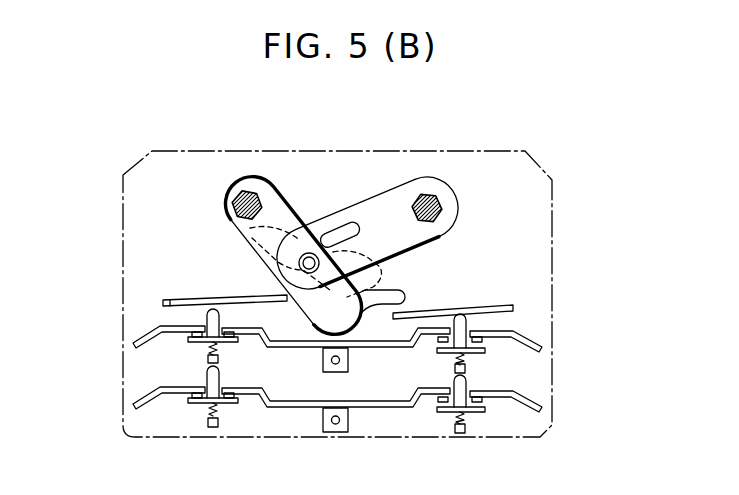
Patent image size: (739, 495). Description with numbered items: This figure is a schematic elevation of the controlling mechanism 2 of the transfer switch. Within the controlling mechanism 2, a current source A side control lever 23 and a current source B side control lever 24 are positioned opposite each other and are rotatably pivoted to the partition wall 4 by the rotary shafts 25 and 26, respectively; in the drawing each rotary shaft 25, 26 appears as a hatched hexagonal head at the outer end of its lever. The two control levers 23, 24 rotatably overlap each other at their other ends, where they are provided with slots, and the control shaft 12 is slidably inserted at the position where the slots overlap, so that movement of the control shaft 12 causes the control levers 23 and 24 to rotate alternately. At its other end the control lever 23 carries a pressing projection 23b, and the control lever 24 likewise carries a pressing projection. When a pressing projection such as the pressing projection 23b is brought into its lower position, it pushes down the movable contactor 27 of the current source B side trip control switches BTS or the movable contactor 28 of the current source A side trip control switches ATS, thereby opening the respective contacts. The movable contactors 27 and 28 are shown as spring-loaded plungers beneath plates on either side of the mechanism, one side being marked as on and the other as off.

The controlling mechanism 2 is at (562, 191).
The partition wall 4 is at (522, 165).
The control shaft 12 is at (310, 252).
The current source A side control lever 23 is at (277, 205).
The pressing projection 23b is at (390, 297).
The current source B side control lever 24 is at (370, 207).
The rotary shaft 25 is at (244, 190).
The rotary shaft 26 is at (423, 195).
The movable contactor 27 is at (218, 380).
The movable contactor 28 is at (475, 387).